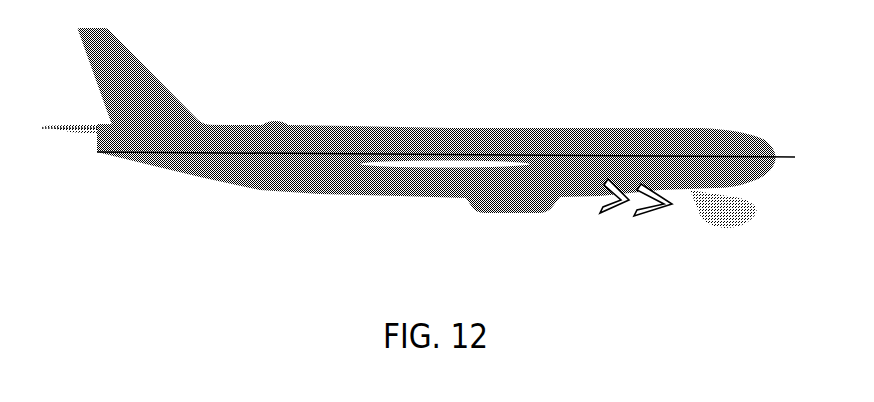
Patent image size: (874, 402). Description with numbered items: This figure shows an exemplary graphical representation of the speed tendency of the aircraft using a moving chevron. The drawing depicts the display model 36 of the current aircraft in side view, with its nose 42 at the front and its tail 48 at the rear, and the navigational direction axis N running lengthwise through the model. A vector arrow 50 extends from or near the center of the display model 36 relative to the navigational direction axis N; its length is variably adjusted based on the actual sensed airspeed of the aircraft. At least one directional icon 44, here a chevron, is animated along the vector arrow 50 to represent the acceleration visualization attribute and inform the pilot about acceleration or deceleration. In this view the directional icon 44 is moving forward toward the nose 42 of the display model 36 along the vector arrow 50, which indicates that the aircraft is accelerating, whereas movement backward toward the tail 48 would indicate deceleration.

The display model 36 is at (260, 187).
The nose 42 is at (747, 137).
The directional icon 44 is at (647, 221).
The tail 48 is at (173, 113).
The vector arrow 50 is at (718, 228).
The navigational direction axis N is at (676, 155).